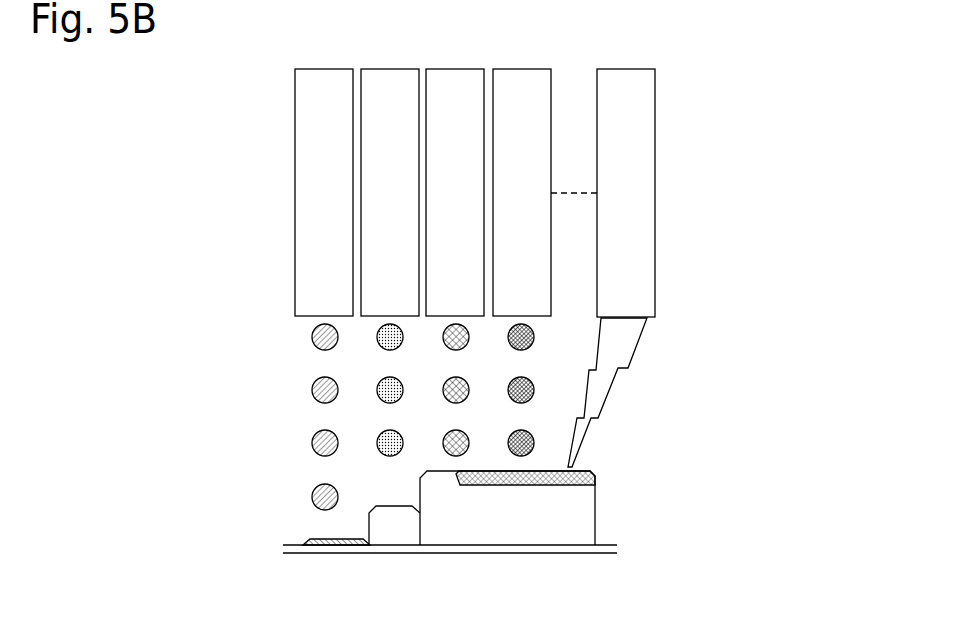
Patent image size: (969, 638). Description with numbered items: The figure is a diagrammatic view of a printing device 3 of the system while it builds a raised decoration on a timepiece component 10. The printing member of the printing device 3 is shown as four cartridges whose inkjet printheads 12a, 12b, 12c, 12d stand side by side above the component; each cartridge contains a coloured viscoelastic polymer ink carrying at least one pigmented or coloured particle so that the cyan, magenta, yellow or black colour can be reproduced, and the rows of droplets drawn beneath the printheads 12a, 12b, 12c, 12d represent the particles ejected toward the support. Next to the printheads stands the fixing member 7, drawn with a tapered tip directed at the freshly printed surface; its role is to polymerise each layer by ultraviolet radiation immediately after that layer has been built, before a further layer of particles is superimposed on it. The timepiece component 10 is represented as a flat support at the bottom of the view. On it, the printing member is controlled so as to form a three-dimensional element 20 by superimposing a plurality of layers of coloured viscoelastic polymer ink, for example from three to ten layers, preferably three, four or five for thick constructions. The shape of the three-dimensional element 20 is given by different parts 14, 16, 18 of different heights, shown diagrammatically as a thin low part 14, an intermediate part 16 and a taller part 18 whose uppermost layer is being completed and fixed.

The printing device 3 is at (705, 157).
The fixing member 7 is at (620, 78).
The printhead 12a is at (318, 78).
The printhead 12b is at (383, 78).
The printhead 12c is at (449, 78).
The printhead 12d is at (515, 78).
The timepiece component 10 is at (289, 553).
The part 14 is at (347, 547).
The part 16 is at (399, 535).
The part 18 is at (510, 527).
The three-dimensional element 20 is at (600, 496).